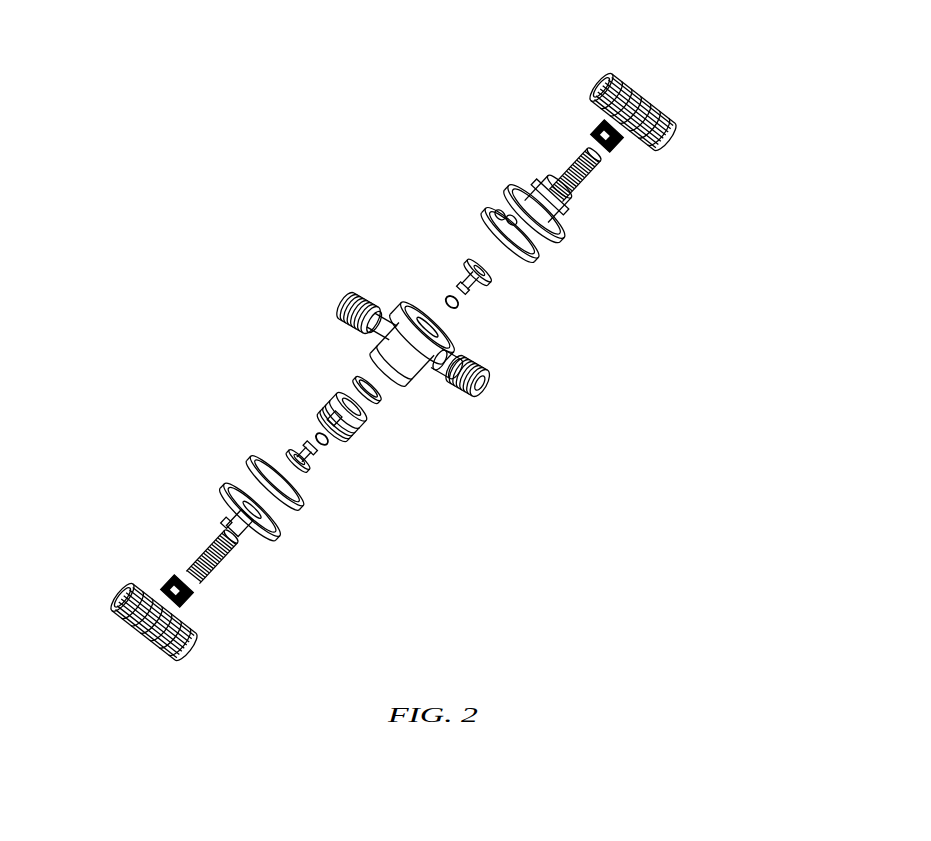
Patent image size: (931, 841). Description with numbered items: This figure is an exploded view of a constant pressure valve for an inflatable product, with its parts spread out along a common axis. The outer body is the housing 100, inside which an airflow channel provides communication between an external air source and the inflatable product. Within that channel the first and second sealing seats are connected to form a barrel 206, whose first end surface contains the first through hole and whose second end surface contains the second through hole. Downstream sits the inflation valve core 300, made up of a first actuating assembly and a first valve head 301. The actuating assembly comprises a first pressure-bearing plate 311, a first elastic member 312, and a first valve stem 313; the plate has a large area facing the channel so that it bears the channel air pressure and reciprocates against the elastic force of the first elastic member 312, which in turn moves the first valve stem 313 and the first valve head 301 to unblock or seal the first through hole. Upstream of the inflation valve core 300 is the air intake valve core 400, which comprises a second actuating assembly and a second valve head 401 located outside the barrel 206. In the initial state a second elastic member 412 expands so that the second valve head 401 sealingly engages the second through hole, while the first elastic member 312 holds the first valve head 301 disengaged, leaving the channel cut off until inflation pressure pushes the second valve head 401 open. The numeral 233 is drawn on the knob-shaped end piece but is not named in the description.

The housing 100 is at (392, 310).
The barrel 206 is at (328, 407).
The adjustment knob 233 is at (662, 117).
The inflation valve core 300 is at (487, 185).
The first valve head 301 is at (463, 310).
The first pressure-bearing plate 311 is at (468, 257).
The first elastic member 312 is at (587, 177).
The first valve stem 313 is at (473, 293).
The air intake valve core 400 is at (342, 485).
The second valve head 401 is at (310, 440).
The second elastic member 412 is at (197, 553).